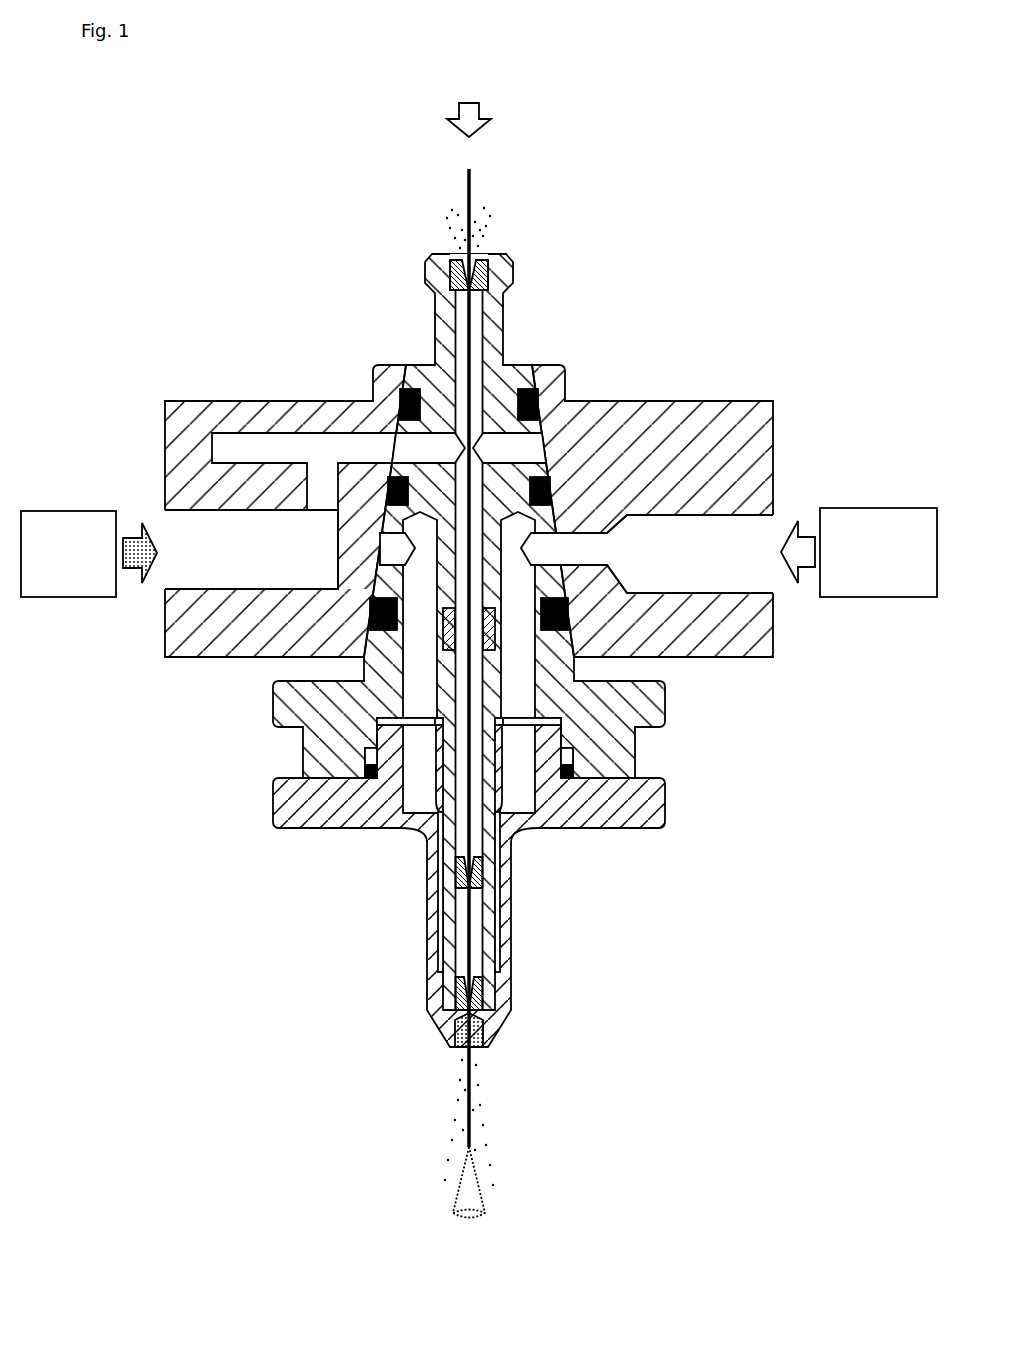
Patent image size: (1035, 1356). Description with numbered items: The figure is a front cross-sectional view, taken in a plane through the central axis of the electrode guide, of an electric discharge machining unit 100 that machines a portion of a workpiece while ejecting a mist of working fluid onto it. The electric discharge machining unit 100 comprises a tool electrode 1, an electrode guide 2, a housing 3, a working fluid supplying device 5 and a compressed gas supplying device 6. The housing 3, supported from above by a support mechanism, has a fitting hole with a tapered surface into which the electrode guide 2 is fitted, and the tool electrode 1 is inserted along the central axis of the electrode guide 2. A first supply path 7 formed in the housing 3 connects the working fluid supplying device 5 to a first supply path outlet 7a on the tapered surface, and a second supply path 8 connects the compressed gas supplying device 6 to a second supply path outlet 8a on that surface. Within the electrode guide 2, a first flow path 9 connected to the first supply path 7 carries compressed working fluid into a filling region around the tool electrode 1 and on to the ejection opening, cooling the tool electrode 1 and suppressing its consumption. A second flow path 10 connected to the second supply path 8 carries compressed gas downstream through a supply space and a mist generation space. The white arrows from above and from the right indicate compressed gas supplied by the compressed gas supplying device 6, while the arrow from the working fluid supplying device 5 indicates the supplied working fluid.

The electric discharge machining unit 100 is at (240, 205).
The tool electrode 1 is at (471, 180).
The electrode guide 2 is at (556, 313).
The housing 3 is at (714, 369).
The working fluid supplying device 5 is at (95, 511).
The compressed gas supplying device 6 is at (852, 508).
The first supply path 7 is at (227, 559).
The first supply path outlet 7a is at (394, 446).
The second supply path 8 is at (684, 561).
The second supply path outlet 8a is at (562, 548).
The first flow path 9 is at (422, 457).
The second flow path 10 is at (525, 597).